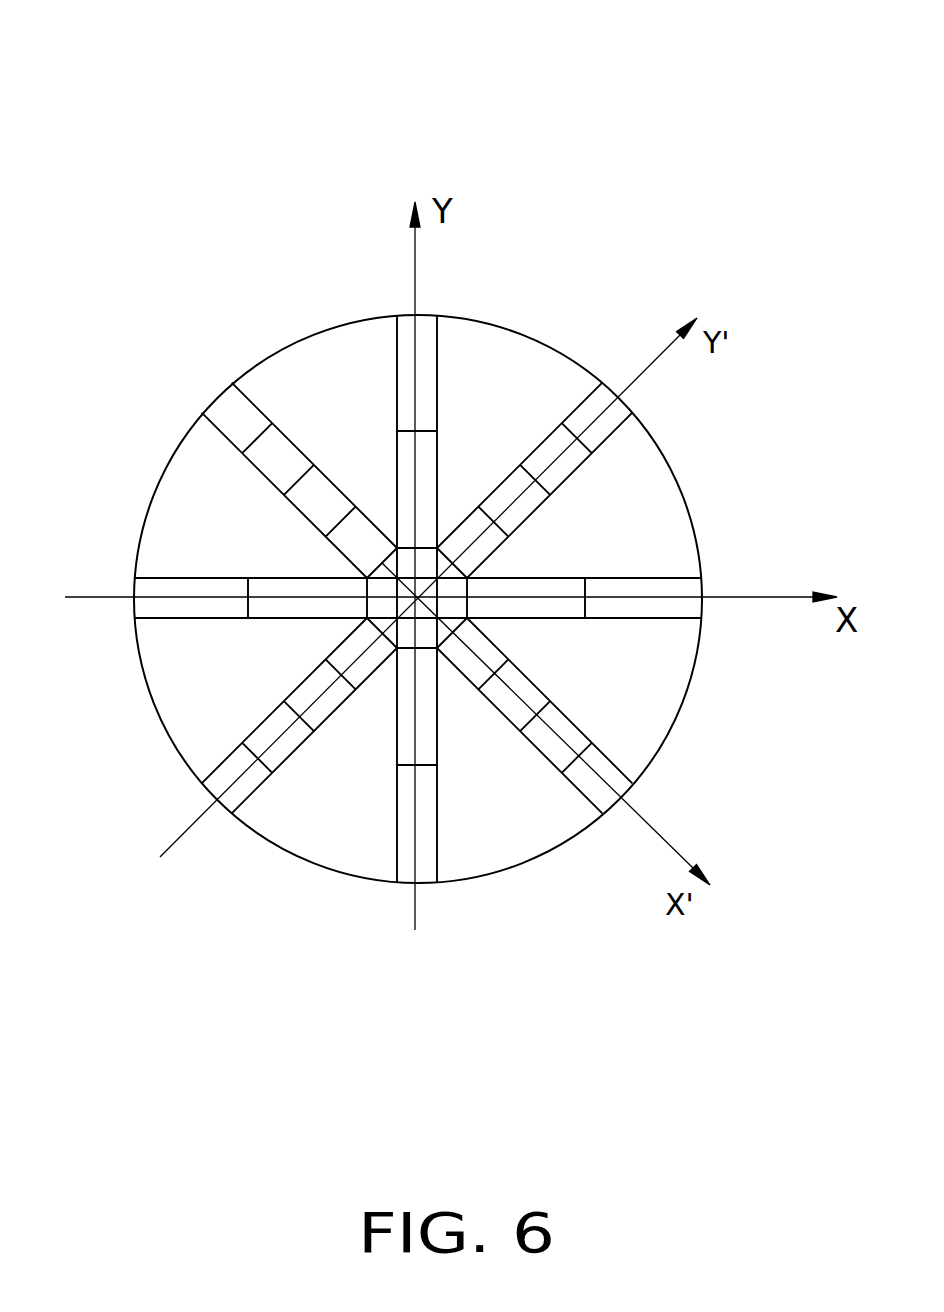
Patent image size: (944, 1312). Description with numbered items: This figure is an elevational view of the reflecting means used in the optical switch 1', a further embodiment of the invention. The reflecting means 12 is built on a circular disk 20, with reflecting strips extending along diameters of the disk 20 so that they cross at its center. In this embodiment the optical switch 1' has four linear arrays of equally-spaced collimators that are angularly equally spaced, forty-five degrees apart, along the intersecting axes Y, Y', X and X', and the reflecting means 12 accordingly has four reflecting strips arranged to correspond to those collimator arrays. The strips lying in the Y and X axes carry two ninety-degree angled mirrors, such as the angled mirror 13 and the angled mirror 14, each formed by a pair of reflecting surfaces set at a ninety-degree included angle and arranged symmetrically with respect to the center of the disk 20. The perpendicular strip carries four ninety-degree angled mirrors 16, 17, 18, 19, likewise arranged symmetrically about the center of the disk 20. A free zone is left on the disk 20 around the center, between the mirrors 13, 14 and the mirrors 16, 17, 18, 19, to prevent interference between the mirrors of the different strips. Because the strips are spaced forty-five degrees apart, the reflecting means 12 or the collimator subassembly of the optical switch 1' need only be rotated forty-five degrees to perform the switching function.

The optical switch 1' is at (284, 23).
The reflecting means 12 is at (407, 630).
The 90-degree angled mirror 13 is at (425, 342).
The 90-degree angled mirror 14 is at (430, 827).
The 90-degree angled mirror 16 is at (160, 593).
The 90-degree angled mirror 17 is at (277, 590).
The 90-degree angled mirror 18 is at (568, 590).
The 90-degree angled mirror 19 is at (620, 590).
The disk 20 is at (337, 370).